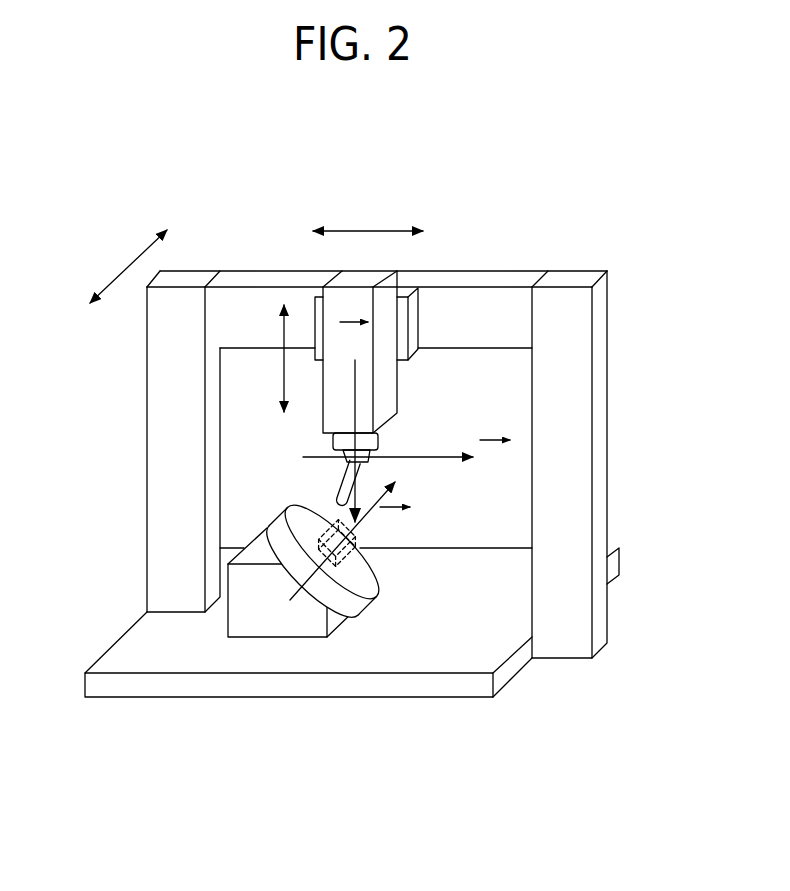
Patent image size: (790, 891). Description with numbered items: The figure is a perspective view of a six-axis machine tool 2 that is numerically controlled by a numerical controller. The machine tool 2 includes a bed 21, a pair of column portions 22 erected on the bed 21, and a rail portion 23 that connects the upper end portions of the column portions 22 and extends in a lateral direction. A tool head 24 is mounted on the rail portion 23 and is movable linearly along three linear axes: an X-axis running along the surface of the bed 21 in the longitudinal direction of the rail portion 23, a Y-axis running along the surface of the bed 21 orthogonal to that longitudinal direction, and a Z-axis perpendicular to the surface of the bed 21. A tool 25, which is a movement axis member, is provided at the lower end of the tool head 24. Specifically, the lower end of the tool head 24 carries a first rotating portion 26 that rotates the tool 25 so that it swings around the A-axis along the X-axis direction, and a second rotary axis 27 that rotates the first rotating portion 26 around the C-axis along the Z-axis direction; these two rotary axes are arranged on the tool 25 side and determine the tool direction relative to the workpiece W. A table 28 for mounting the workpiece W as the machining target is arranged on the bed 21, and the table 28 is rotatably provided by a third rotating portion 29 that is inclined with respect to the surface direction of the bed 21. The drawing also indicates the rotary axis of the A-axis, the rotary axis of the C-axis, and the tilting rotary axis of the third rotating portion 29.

The 6-axis machine tool 2 is at (592, 155).
The bed 21 is at (127, 647).
The column portions 22 is at (147, 452).
The rail portion 23 is at (507, 280).
The tool head 24 is at (388, 388).
The tool 25 is at (340, 487).
The first rotating portion 26 is at (370, 470).
The second rotary axis 27 is at (337, 443).
The table 28 is at (367, 608).
The third rotating portion 29 is at (267, 618).
The workpiece W is at (360, 553).